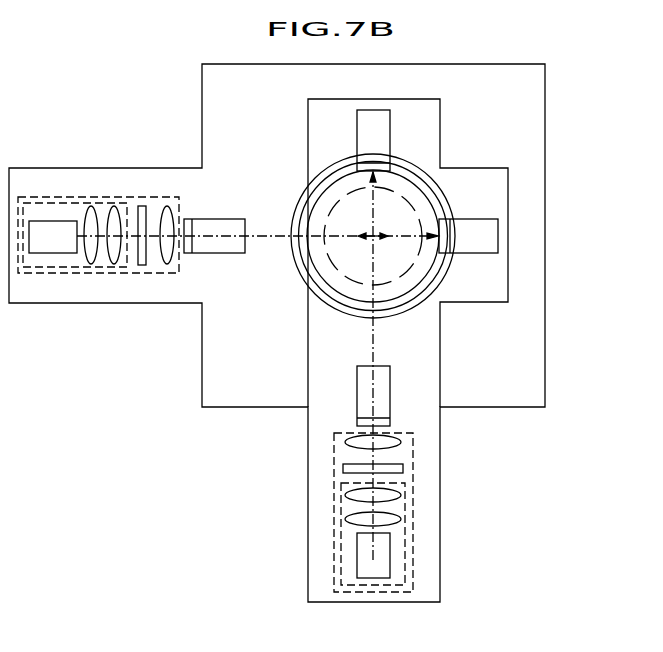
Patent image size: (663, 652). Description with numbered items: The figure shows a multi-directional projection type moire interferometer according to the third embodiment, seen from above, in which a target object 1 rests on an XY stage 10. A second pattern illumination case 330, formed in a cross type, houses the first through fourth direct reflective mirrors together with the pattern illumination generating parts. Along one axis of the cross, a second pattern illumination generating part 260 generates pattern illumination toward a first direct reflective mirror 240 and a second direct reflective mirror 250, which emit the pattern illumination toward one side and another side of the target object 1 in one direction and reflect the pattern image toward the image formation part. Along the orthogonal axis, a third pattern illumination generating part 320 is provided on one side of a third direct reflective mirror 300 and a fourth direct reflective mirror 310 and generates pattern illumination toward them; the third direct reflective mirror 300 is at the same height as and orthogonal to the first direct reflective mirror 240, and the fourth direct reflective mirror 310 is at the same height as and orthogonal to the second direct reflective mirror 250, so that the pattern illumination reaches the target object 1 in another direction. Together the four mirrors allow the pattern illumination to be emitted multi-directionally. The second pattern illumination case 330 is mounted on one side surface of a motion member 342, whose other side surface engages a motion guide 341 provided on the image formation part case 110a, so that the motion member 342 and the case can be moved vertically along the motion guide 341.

The target object 1 is at (415, 260).
The XY stage 10 is at (202, 378).
The image formation part case 110a is at (405, 177).
The first direct reflective mirror 240 is at (230, 255).
The second direct reflective mirror 250 is at (498, 233).
The second pattern illumination generating part 260 is at (93, 197).
The third direct reflective mirror 300 is at (390, 387).
The fourth direct reflective mirror 310 is at (357, 128).
The third pattern illumination generating part 320 is at (413, 564).
The second pattern illumination case 330 is at (167, 168).
The motion guide 341 is at (432, 185).
The motion member 342 is at (450, 205).